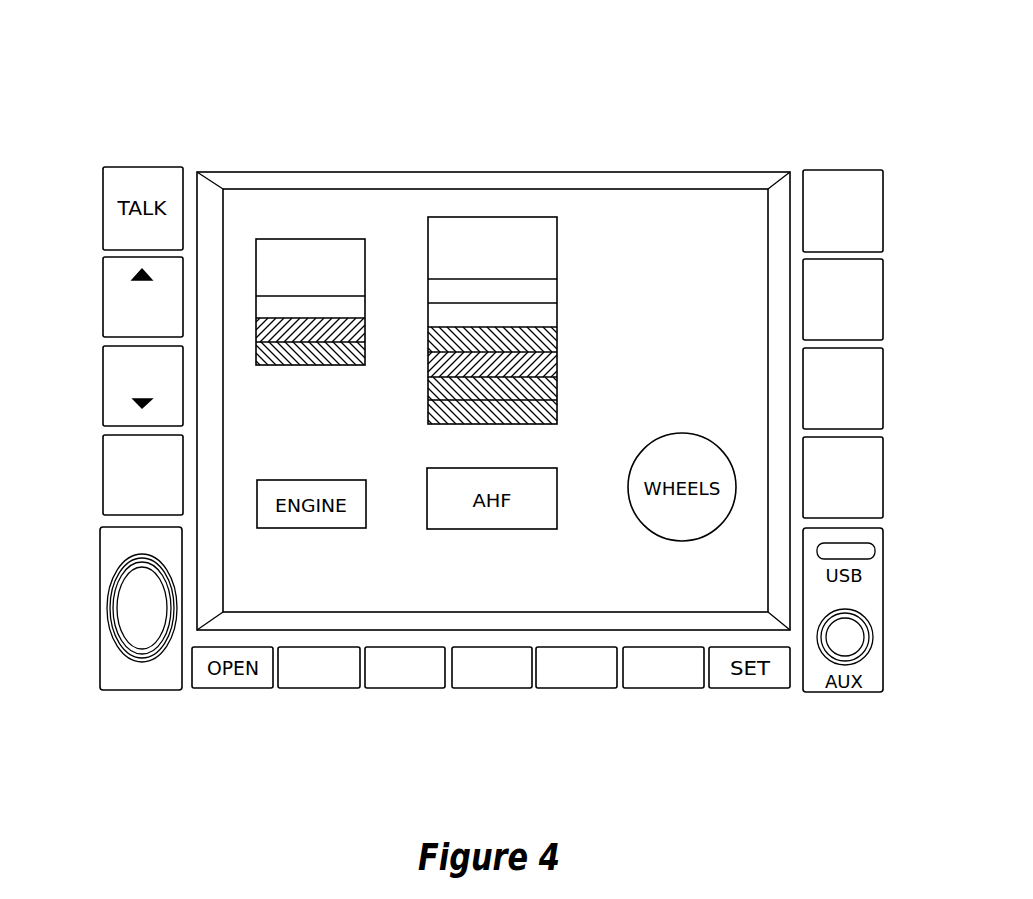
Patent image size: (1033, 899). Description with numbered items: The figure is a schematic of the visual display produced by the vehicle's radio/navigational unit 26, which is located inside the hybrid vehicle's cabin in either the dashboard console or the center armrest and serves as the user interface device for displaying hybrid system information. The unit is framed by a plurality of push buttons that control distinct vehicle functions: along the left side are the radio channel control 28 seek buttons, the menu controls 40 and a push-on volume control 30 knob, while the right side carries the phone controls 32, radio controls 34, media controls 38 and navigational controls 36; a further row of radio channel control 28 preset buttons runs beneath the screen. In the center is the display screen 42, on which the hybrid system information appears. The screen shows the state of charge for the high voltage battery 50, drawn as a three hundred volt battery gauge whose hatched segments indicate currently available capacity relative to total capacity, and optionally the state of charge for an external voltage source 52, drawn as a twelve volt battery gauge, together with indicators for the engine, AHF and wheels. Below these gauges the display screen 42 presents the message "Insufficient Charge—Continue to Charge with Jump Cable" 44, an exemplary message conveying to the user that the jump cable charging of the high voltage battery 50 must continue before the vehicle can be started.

The radio/navigational unit 26 is at (496, 82).
The radio channel control 28 is at (103, 300).
The volume control 30 is at (101, 607).
The phone controls 32 is at (883, 213).
The radio controls 34 is at (883, 300).
The navigational controls 36 is at (883, 476).
The media controls 38 is at (883, 388).
The menu controls 40 is at (103, 475).
The display screen 42 is at (240, 205).
The "Insufficient Charge—Continue to Charge with Jump Cable" message 44 is at (246, 577).
The high voltage battery 50 is at (495, 217).
The external voltage source 52 is at (313, 239).